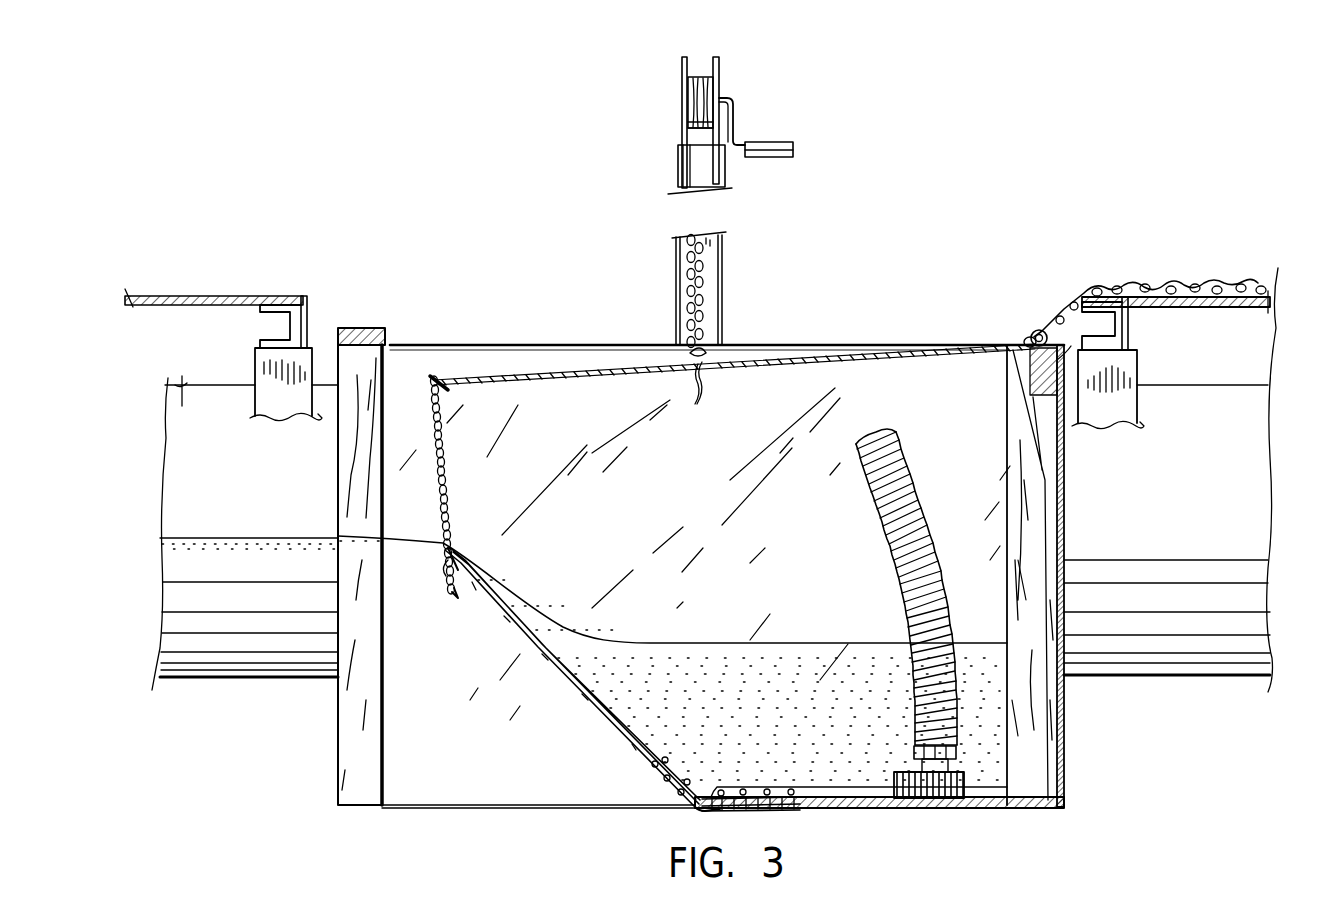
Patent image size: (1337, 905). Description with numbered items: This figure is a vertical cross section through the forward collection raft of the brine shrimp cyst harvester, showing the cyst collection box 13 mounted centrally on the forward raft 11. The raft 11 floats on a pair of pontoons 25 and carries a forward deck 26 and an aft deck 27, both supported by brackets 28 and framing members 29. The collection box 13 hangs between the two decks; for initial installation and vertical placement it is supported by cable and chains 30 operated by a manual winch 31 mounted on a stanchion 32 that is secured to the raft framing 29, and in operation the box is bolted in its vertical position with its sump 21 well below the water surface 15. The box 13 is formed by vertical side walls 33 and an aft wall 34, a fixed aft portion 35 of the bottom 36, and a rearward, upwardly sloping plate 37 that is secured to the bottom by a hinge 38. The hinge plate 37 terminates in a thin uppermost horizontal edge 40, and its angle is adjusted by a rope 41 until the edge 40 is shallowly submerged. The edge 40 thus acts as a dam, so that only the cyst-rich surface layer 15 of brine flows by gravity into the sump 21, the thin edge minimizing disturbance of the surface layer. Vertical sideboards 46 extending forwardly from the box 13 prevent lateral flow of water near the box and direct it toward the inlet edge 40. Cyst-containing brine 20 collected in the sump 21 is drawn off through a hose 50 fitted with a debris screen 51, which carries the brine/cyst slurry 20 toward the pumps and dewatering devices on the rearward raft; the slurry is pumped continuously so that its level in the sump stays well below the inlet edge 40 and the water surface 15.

The forward raft 11 is at (232, 295).
The cyst collection box 13 is at (503, 344).
The cyst rich surface layer 15 is at (222, 540).
The cyst containing brine 20 is at (862, 762).
The bottom sump 21 is at (1043, 766).
The pontoons 25 is at (1272, 400).
The forward deck 26 is at (1120, 294).
The aft deck 27 is at (210, 294).
The brackets 28 is at (298, 364).
The framing members 29 is at (299, 332).
The cable and chains 30 is at (712, 300).
The manual winch 31 is at (683, 108).
The stanchion 32 is at (722, 264).
The side walls 33 is at (878, 366).
The aft wall 34 is at (1006, 440).
The fixed aft portion of bottom 35 is at (916, 806).
The bottom 36 is at (778, 808).
The hinge plate 37 is at (575, 691).
The hinge 38 is at (698, 810).
The water inlet control edge 40 is at (440, 586).
The rope 41 is at (606, 368).
The vertical sideboards 46 is at (168, 390).
The hose 50 is at (888, 430).
The debris screen 51 is at (992, 790).